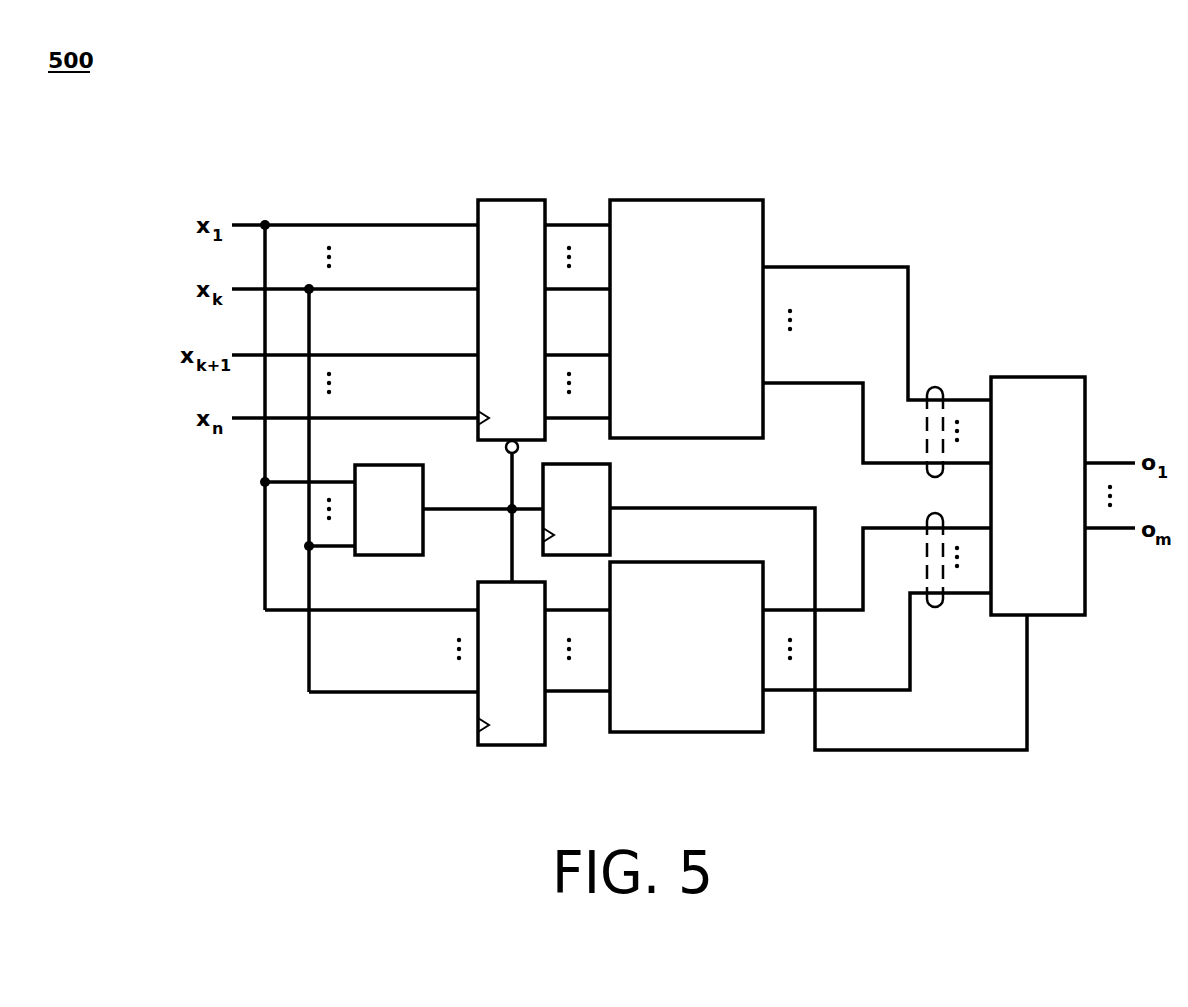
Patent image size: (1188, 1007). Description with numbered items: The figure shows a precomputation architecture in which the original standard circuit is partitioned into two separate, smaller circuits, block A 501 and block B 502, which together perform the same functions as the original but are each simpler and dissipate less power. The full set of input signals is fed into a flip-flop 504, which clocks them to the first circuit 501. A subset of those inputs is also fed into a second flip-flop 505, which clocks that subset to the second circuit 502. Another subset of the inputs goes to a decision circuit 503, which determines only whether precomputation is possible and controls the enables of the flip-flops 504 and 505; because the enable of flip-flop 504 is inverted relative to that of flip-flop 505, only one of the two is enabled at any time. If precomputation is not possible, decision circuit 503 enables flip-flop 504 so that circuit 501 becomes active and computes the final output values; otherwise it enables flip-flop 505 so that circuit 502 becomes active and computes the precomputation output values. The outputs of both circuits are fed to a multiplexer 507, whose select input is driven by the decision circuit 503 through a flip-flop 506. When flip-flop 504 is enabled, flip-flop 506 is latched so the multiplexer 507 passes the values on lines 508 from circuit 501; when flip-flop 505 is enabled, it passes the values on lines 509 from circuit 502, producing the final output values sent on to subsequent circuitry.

The block A circuit 501 is at (740, 200).
The block B circuit 502 is at (718, 732).
The decision circuit 503 is at (388, 465).
The flip-flop 504 is at (513, 200).
The second flip-flop 505 is at (525, 745).
The flip-flop 506 is at (610, 488).
The multiplexer 507 is at (1085, 400).
The lines 508 is at (935, 387).
The lines 509 is at (935, 607).